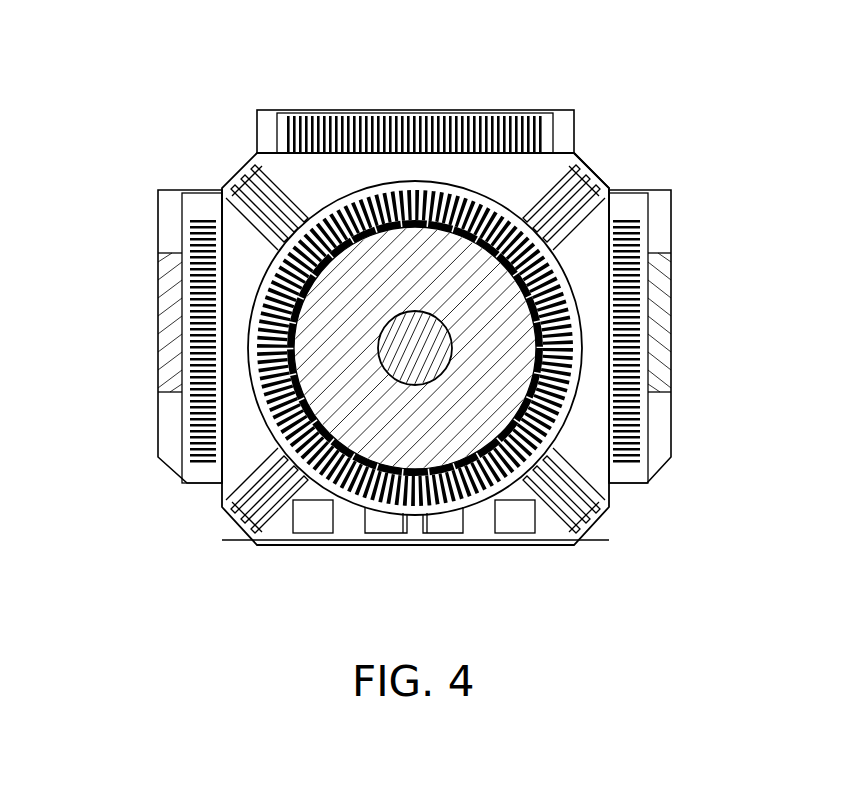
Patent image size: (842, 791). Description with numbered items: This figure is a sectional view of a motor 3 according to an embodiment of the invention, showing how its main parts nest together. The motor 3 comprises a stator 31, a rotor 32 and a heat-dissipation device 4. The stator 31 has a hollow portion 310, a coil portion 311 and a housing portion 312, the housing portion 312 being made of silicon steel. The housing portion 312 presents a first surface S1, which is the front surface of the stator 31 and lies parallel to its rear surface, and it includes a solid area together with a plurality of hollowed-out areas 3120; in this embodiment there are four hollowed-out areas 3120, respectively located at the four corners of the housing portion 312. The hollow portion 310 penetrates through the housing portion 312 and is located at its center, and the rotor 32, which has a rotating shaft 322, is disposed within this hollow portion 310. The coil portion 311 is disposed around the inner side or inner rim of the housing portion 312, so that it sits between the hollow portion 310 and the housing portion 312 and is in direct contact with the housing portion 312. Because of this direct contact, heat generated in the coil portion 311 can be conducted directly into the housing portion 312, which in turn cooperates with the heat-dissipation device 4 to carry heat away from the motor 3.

The motor 3 is at (816, 60).
The heat-dissipation device 4 is at (255, 112).
The stator 31 is at (733, 338).
The hollow portion 310 is at (540, 355).
The coil portion 311 is at (637, 467).
The housing portion 312 is at (592, 396).
The hollowed-out areas 3120 is at (594, 182).
The first surface S1 is at (535, 168).
The rotor 32 is at (318, 323).
The rotating shaft 322 is at (270, 433).